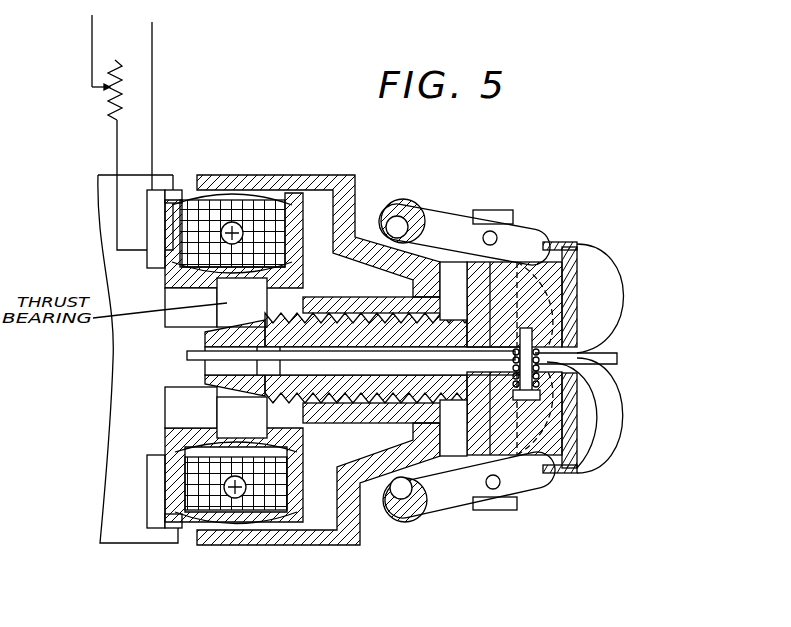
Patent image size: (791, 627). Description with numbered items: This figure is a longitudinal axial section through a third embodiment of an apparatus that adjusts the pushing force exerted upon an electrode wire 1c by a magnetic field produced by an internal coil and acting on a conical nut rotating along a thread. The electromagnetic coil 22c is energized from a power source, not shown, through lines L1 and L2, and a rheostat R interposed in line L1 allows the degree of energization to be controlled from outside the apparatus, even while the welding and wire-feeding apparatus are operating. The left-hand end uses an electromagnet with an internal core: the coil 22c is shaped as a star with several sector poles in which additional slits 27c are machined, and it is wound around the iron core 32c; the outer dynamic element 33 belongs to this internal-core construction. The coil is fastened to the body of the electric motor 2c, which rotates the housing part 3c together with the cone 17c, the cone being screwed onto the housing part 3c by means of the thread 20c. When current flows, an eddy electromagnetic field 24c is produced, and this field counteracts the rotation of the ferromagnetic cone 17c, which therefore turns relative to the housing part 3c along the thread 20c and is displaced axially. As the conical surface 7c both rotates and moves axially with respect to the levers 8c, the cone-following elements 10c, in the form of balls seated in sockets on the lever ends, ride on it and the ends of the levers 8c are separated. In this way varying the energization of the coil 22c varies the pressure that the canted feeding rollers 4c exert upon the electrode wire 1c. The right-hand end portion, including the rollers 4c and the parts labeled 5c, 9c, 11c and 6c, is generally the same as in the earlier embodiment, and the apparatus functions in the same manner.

The line L1 is at (91, 61).
The line L2 is at (154, 80).
The rheostat R is at (112, 103).
The eddy electromagnetic field 24c is at (184, 197).
The outer dynamic element 33 is at (277, 177).
The cone-following element 10c is at (400, 203).
The lever pin 9c is at (493, 232).
The housing part 3c is at (520, 243).
The end plate 5c is at (557, 293).
The canted feeding roller 4c is at (610, 312).
The electrode wire 1c is at (617, 359).
The spring 11c is at (575, 395).
The conical surface 7c is at (432, 259).
The thread 20c is at (330, 327).
The shaft 6c is at (222, 340).
The electric motor 2c is at (127, 410).
The iron core 32c is at (167, 458).
The slit 27c is at (175, 520).
The coil 22c is at (200, 508).
The cone 17c is at (427, 443).
The lever 8c is at (463, 507).